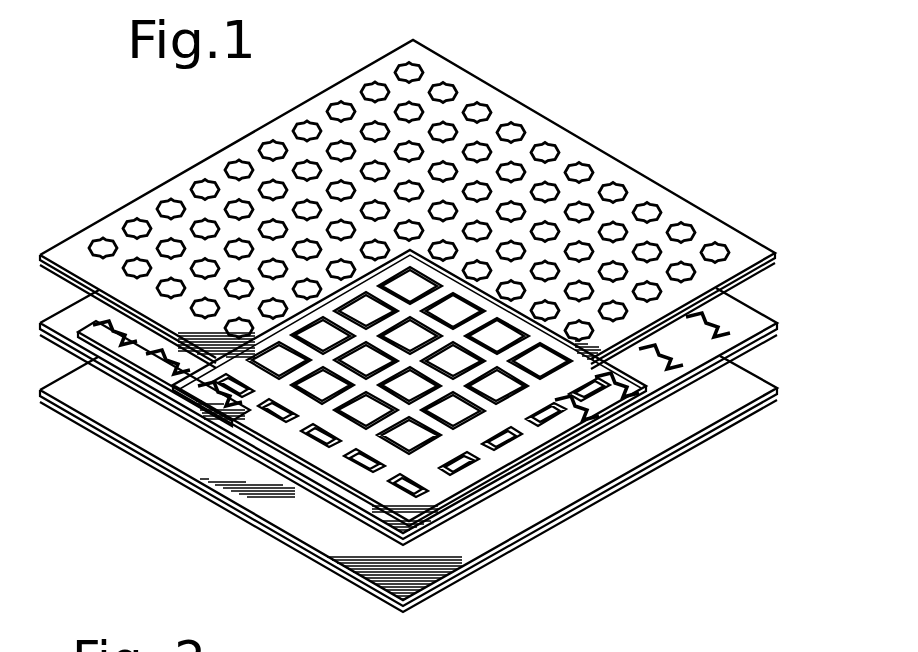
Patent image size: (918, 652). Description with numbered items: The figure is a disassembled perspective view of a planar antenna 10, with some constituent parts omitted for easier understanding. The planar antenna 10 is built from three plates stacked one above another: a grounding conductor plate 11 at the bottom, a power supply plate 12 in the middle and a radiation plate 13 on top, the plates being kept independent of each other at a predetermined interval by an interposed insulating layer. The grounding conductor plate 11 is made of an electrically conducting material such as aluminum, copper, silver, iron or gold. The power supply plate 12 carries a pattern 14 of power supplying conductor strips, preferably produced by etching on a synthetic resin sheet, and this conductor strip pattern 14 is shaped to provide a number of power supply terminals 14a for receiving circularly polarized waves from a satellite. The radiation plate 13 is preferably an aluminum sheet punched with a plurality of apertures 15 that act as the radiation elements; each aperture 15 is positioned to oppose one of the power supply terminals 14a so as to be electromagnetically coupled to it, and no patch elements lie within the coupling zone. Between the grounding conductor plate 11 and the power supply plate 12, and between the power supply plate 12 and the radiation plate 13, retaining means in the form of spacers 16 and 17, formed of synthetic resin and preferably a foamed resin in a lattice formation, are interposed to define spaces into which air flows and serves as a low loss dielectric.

The planar antenna 10 is at (650, 159).
The grounding conductor plate 11 is at (747, 385).
The power supply plate 12 is at (750, 313).
The radiation plate 13 is at (409, 204).
The pattern of power supplying conductor strips 14 is at (245, 408).
The power supply terminals 14a is at (208, 387).
The apertures 15 is at (578, 168).
The spacer 16 is at (240, 512).
The spacer 17 is at (290, 462).